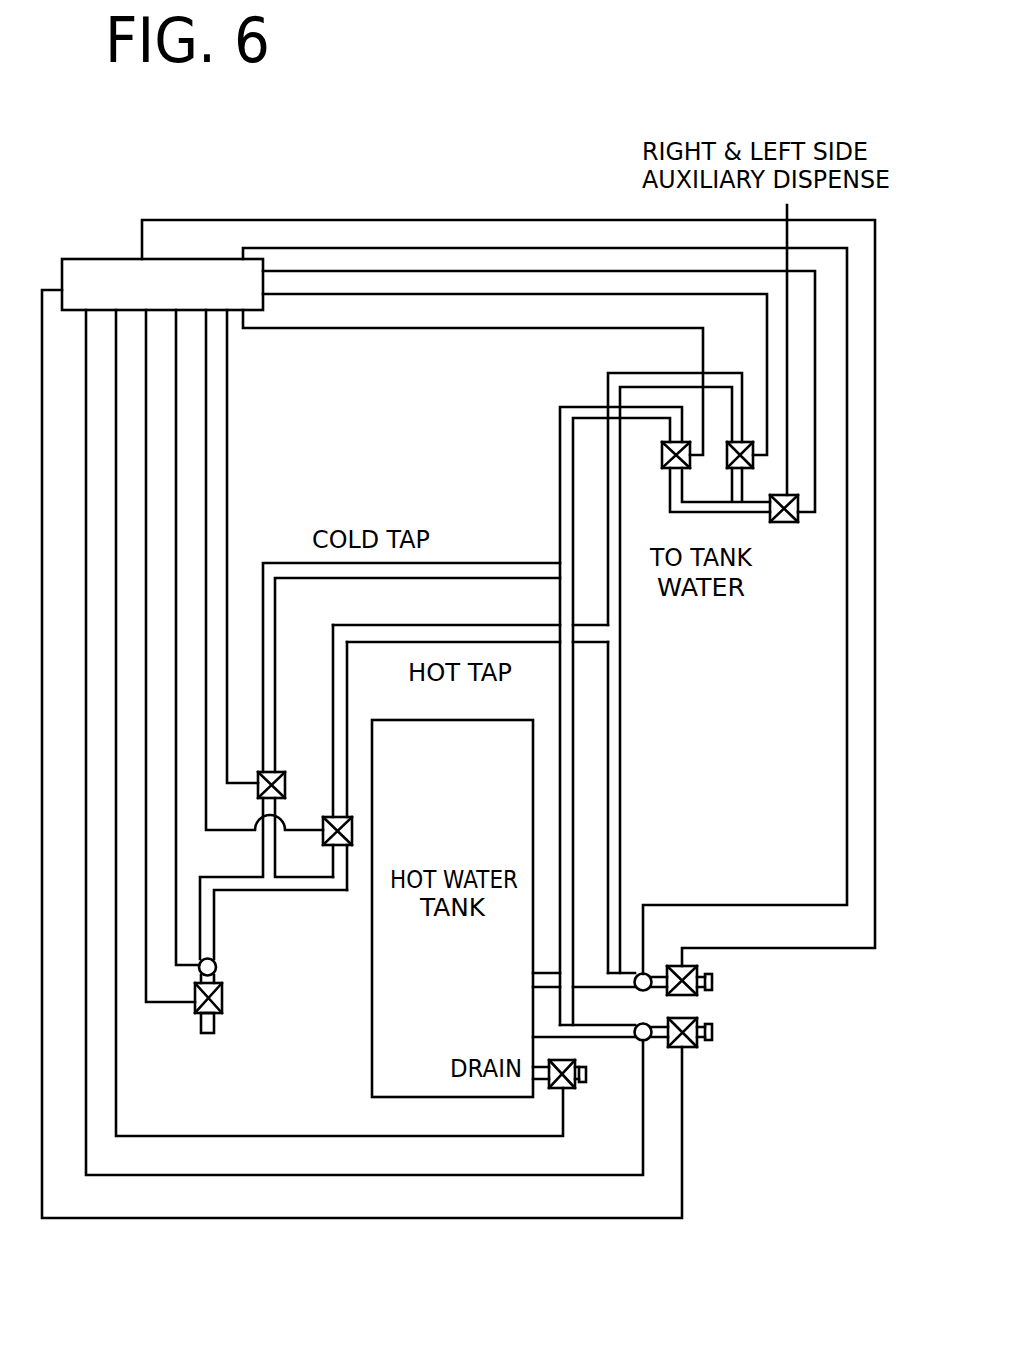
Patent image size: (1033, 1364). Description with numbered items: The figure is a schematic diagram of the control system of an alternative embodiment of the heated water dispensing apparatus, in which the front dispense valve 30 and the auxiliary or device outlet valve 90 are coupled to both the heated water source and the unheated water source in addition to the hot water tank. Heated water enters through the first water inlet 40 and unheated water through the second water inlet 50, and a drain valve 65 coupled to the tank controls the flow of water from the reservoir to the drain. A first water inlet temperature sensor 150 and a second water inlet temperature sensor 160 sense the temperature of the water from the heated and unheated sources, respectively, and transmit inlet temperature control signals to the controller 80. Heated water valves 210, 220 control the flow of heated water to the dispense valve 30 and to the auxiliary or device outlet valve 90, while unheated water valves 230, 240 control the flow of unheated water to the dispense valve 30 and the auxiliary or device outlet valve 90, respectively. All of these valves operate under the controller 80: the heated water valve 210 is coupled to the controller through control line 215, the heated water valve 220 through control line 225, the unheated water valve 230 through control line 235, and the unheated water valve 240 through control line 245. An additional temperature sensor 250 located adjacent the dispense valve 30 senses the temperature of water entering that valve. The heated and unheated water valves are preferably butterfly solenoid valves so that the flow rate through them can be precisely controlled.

The dispense valve 30 is at (222, 1012).
The first water inlet 40 is at (712, 981).
The second water inlet 50 is at (712, 1031).
The drain valve 65 is at (572, 1089).
The controller 80 is at (92, 268).
The auxiliary or device outlet valve 90 is at (790, 522).
The first water inlet temperature sensor 150 is at (646, 975).
The second water inlet temperature sensor 160 is at (642, 1041).
The heated water valve 210 is at (352, 819).
The control line 215 is at (206, 412).
The heated water valve 220 is at (745, 443).
The control line 225 is at (698, 300).
The unheated water valve 230 is at (283, 774).
The control line 235 is at (227, 507).
The unheated water valve 240 is at (662, 456).
The control line 245 is at (536, 330).
The temperature sensor 250 is at (215, 958).